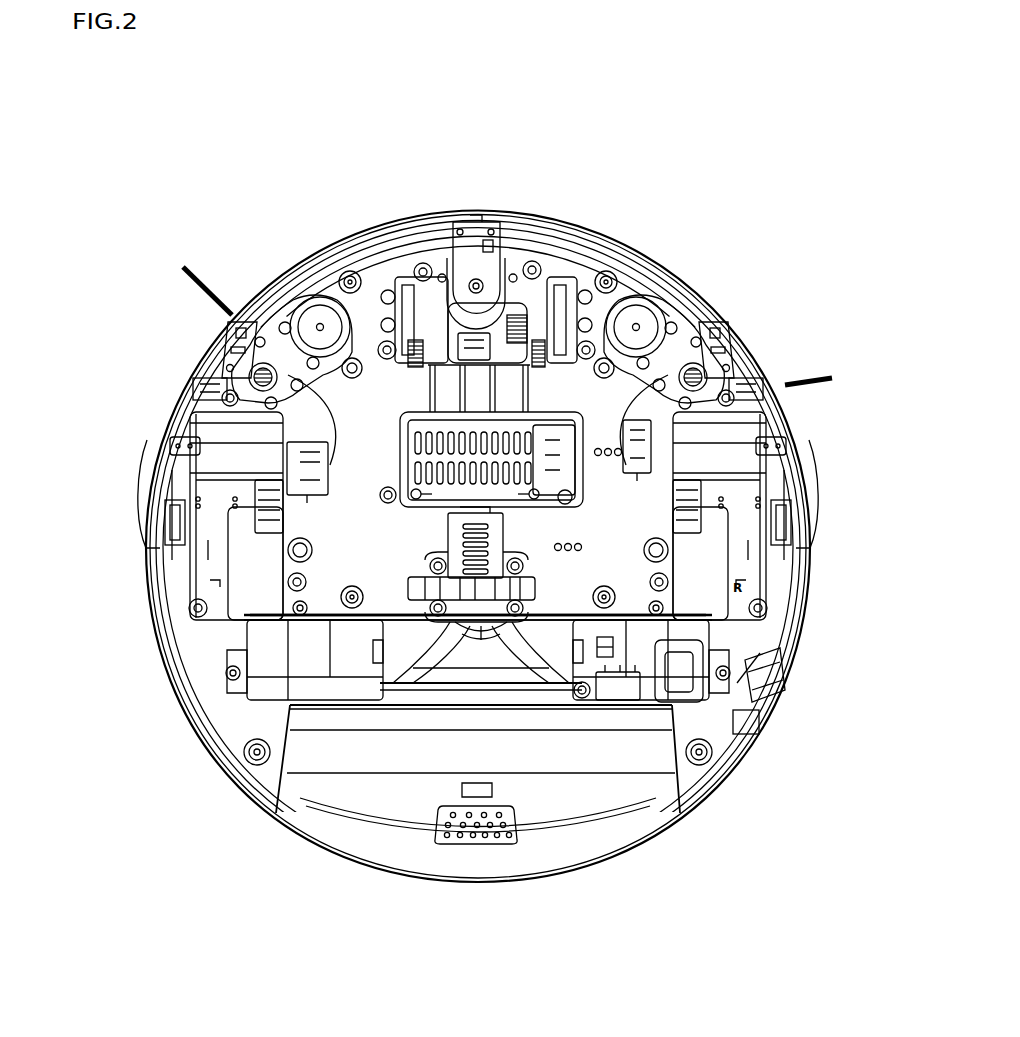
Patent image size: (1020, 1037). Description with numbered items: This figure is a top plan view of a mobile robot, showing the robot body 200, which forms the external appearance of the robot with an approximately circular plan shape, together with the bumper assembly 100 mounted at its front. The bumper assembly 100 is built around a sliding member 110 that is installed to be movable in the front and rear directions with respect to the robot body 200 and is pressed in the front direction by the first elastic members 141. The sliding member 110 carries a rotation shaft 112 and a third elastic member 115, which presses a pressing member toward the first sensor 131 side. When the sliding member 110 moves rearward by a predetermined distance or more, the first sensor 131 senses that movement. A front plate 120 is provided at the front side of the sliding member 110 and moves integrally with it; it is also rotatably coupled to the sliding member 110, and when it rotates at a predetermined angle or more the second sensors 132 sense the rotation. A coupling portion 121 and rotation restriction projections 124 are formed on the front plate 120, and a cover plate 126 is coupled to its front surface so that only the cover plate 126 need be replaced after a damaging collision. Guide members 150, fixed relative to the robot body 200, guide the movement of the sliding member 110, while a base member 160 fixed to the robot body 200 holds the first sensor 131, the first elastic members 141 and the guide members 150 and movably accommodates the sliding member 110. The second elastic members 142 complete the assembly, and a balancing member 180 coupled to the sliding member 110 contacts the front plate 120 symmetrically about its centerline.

The bumper assembly 100 is at (185, 329).
The sliding member 110 is at (580, 247).
The rotation shaft 112 is at (472, 226).
The third elastic member 115 is at (642, 263).
The front plate 120 is at (391, 232).
The coupling portion 121 is at (517, 265).
The rotation restriction projections 124 is at (368, 252).
The cover plate 126 is at (428, 212).
The first sensor 131 is at (640, 298).
The second sensors 132 is at (158, 512).
The first elastic members 141 is at (297, 262).
The second elastic members 142 is at (162, 478).
The guide members 150 is at (362, 262).
The base member 160 is at (698, 348).
The balancing member 180 is at (533, 297).
The robot body 200 is at (756, 766).